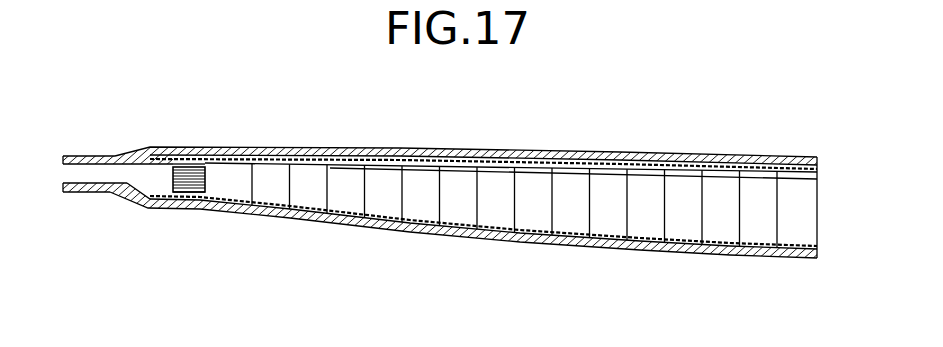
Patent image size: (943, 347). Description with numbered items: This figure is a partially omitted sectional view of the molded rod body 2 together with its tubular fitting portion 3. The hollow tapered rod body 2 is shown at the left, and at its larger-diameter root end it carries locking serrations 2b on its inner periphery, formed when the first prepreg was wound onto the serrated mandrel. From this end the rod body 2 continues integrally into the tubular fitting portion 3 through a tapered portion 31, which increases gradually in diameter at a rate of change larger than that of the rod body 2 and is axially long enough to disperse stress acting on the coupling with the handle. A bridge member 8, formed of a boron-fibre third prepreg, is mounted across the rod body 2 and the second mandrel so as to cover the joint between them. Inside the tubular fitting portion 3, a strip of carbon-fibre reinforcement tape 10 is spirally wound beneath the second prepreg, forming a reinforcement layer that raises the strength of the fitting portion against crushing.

The rod body 2 is at (80, 155).
The locking serrations 2b is at (186, 190).
The bridge member 8 is at (187, 156).
The tubular fitting portion 3 is at (355, 148).
The tapered portion 31 is at (408, 148).
The reinforcement tape 10 is at (317, 197).